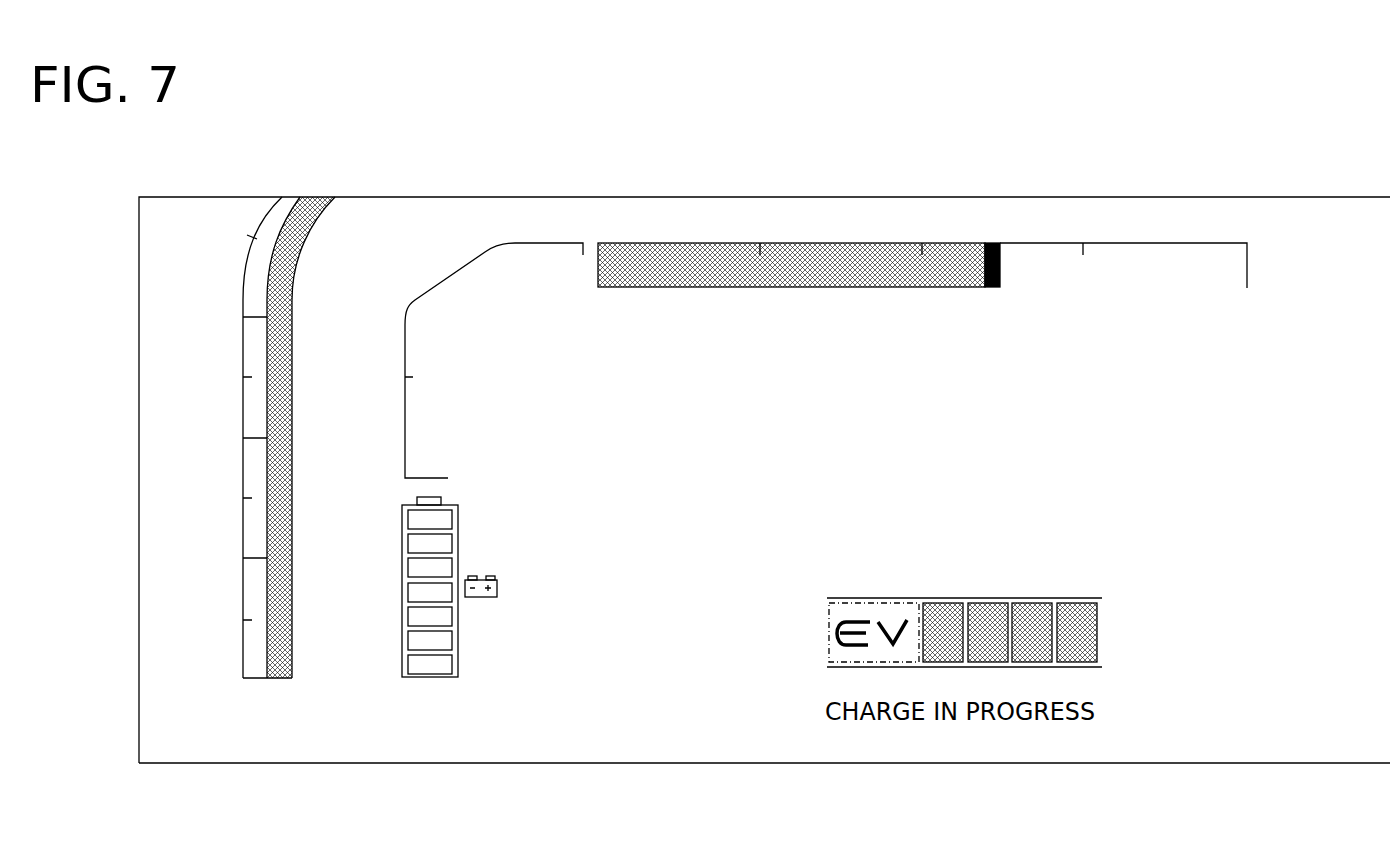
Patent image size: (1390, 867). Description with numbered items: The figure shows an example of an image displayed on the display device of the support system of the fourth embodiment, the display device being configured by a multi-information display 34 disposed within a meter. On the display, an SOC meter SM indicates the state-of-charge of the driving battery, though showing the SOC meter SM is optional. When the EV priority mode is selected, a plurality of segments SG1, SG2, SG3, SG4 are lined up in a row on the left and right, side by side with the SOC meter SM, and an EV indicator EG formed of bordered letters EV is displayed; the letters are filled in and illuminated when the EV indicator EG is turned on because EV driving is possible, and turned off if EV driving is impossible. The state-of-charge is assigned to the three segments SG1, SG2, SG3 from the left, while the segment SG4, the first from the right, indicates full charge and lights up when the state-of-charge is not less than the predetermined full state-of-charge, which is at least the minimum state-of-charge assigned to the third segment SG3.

The multi-information display 34 is at (798, 206).
The SOC meter SM is at (458, 545).
The EV indicator EG is at (828, 617).
The first segment SG1 is at (930, 600).
The second segment SG2 is at (993, 600).
The third segment SG3 is at (1042, 600).
The segment for indicating full charge SG4 is at (1087, 600).